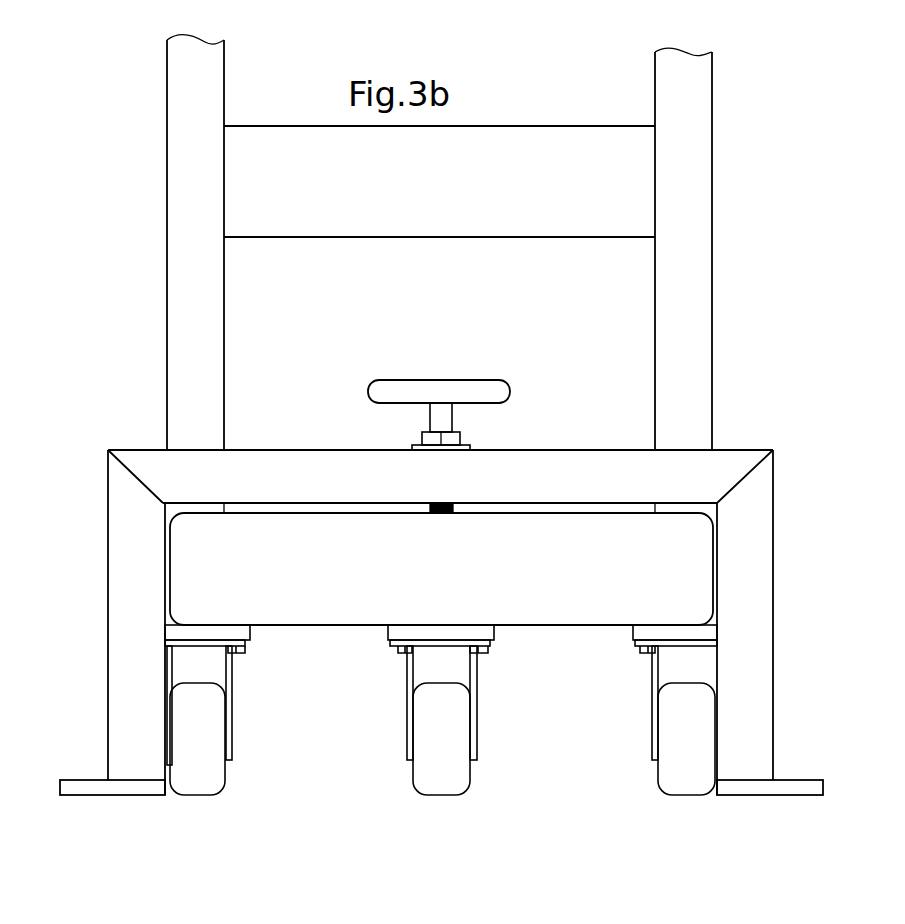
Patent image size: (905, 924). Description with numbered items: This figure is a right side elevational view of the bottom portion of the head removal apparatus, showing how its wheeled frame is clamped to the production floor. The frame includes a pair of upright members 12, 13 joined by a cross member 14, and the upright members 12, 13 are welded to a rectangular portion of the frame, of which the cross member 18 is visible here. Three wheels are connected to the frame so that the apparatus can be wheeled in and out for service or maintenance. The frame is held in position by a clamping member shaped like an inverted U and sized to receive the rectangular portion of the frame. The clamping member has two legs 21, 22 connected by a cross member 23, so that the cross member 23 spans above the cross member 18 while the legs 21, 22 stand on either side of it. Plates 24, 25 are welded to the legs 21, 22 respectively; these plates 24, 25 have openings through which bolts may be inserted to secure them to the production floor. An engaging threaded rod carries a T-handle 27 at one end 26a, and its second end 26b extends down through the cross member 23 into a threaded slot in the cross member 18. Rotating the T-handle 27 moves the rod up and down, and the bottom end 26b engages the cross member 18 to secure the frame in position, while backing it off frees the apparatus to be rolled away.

The upright member 12 is at (178, 287).
The upright member 13 is at (698, 241).
The cross member 14 is at (425, 206).
The cross member 18 is at (406, 572).
The leg 21 is at (146, 580).
The leg 22 is at (760, 580).
The cross member 23 is at (310, 494).
The plate 24 is at (78, 780).
The plate 25 is at (798, 778).
The first end of threaded rod 26a is at (453, 407).
The second end of threaded rod 26b is at (430, 510).
The T-handle 27 is at (455, 380).